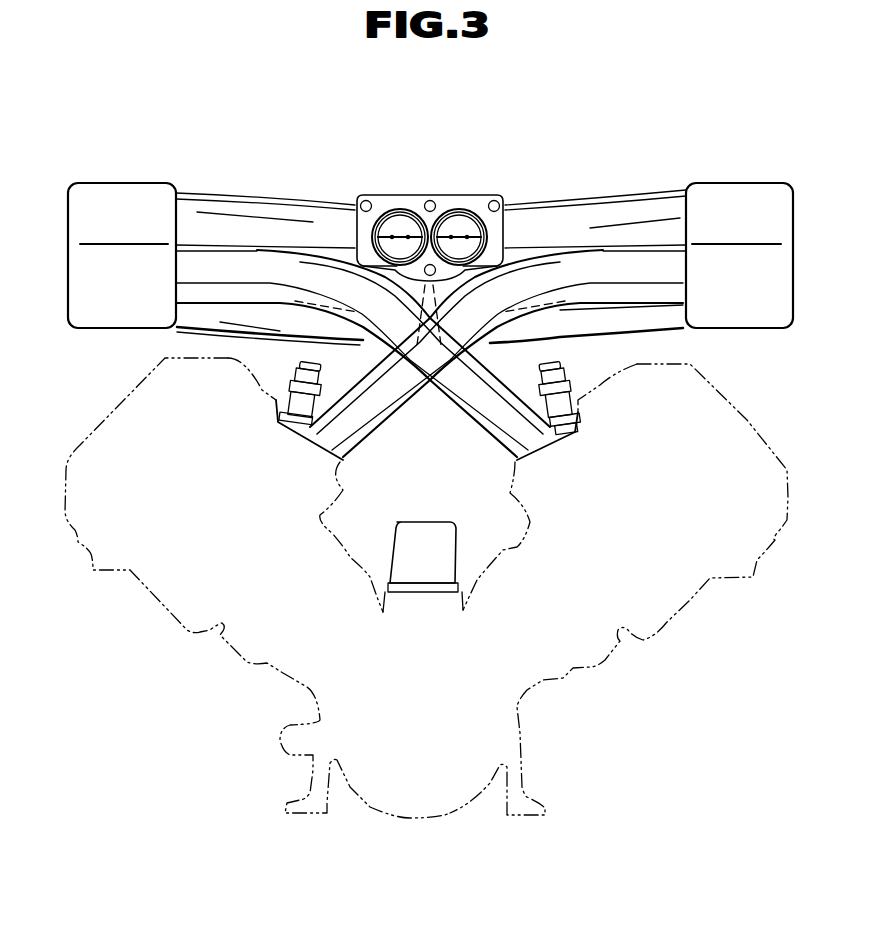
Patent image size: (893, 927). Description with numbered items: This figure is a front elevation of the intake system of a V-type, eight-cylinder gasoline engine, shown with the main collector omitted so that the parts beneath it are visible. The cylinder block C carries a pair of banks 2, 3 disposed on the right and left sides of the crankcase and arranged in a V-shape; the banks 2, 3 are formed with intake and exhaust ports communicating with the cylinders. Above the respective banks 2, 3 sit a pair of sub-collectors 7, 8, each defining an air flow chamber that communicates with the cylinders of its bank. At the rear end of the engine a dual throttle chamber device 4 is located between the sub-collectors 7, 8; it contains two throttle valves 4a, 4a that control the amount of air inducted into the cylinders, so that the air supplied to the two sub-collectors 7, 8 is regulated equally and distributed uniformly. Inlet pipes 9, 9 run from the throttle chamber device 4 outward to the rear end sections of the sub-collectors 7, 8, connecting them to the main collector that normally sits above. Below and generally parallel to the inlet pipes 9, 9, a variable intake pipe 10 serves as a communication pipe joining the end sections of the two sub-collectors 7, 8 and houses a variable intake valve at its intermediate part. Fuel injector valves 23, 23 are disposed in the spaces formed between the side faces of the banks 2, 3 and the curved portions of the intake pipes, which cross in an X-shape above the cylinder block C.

The bank 2 is at (743, 413).
The bank 3 is at (115, 408).
The throttle chamber device 4 is at (439, 217).
The throttle valve 4a is at (394, 213).
The sub-collector 7 is at (782, 290).
The sub-collector 8 is at (70, 266).
The inlet pipe 9 is at (622, 207).
The variable intake pipe 10 is at (668, 330).
The fuel injector valve 23 is at (278, 385).
The cylinder block C is at (688, 608).